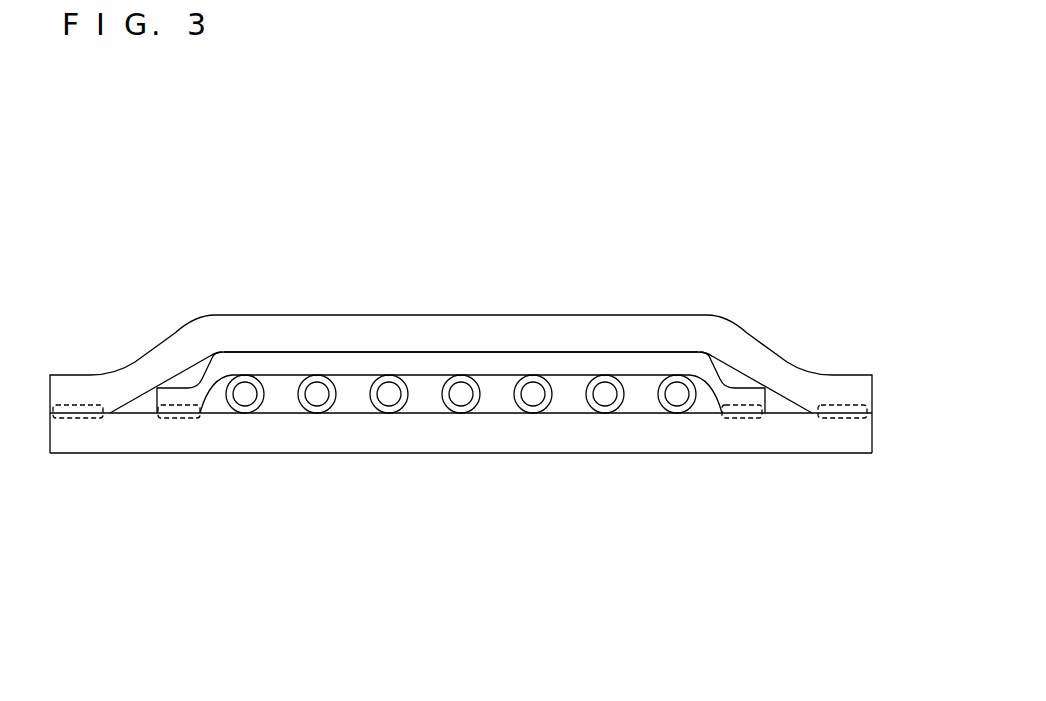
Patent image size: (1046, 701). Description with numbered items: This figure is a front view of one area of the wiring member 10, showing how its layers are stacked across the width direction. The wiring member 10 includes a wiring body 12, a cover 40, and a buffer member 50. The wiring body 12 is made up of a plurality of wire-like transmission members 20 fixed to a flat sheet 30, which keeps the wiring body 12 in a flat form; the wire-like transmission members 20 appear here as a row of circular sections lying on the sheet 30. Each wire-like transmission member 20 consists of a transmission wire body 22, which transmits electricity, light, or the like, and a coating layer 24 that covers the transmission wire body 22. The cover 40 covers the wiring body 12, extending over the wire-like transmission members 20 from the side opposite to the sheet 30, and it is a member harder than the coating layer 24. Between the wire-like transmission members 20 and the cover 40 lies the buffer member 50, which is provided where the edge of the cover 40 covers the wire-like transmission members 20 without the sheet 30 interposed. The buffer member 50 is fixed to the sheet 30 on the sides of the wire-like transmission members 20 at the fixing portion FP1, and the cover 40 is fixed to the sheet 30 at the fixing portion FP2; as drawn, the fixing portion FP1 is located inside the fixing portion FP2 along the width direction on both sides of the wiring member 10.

The wiring member 10 is at (171, 190).
The wiring body 12 is at (482, 507).
The wire-like transmission member 20 is at (435, 377).
The transmission wire body 22 is at (315, 400).
The coating layer 24 is at (334, 409).
The sheet 30 is at (467, 438).
The cover 40 is at (370, 328).
The buffer member 50 is at (437, 360).
The fixing portion FP1 is at (188, 420).
The fixing portion FP2 is at (83, 420).